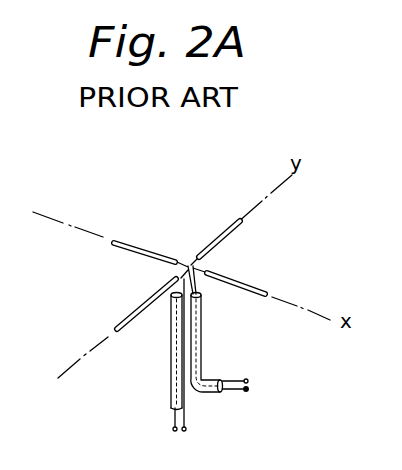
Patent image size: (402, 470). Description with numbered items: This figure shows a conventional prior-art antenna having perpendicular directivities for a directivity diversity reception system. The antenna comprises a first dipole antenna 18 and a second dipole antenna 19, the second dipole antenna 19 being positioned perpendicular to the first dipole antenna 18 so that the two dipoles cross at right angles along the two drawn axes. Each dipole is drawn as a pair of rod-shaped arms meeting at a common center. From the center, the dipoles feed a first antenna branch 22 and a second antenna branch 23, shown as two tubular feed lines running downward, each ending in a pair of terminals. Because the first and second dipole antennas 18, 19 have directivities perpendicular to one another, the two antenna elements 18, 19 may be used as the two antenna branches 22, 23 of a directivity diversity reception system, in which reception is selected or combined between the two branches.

The first dipole antenna 18 is at (141, 247).
The second dipole antenna 19 is at (220, 232).
The first antenna branch 22 is at (203, 301).
The second antenna branch 23 is at (171, 312).